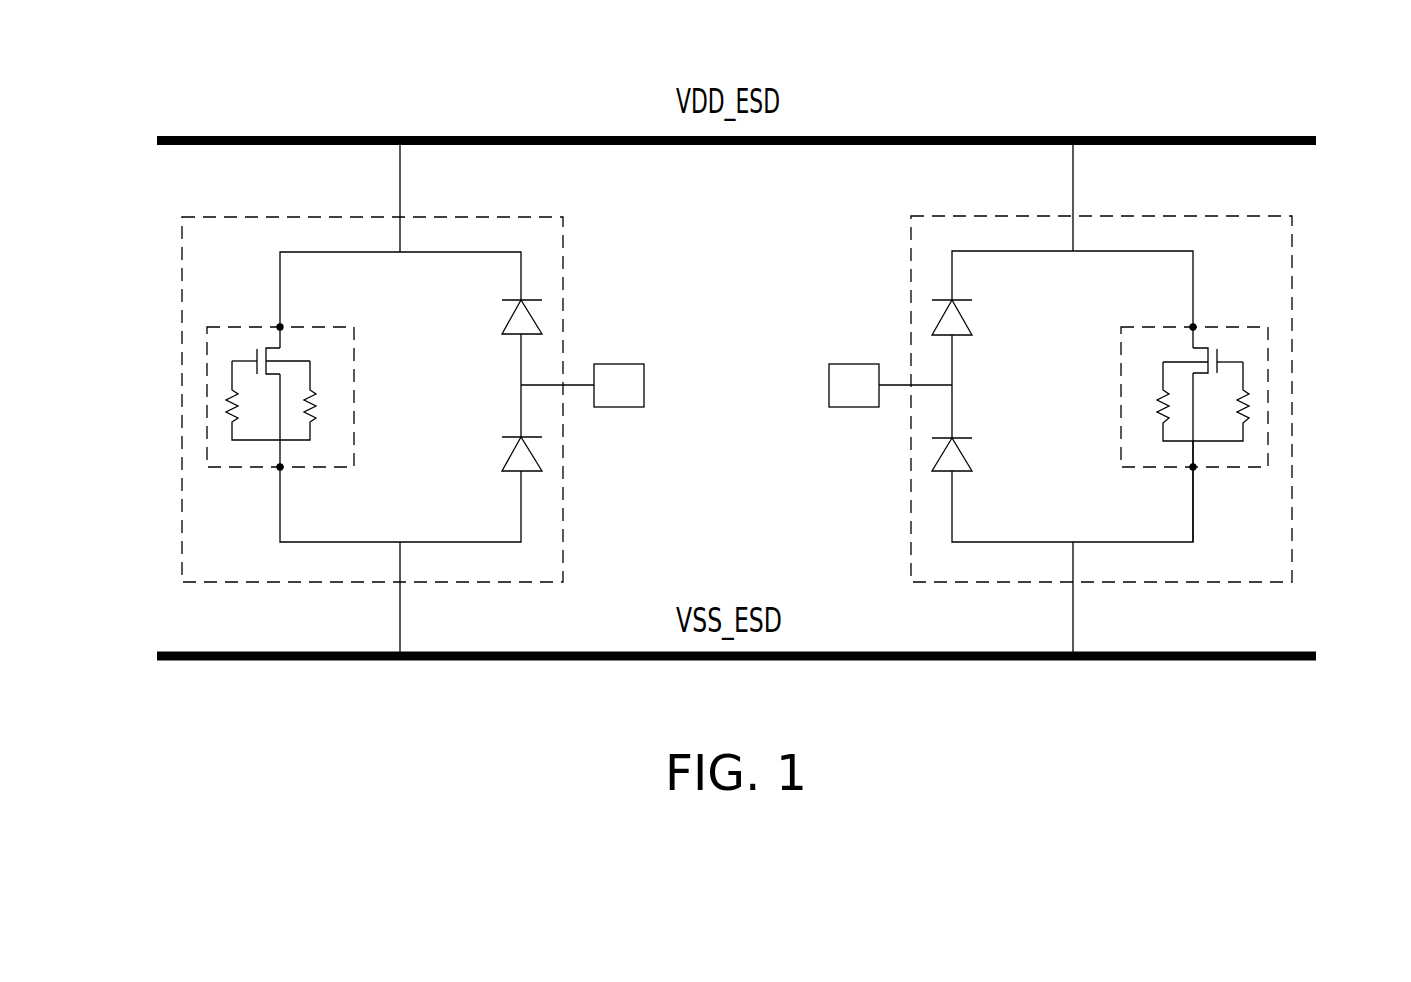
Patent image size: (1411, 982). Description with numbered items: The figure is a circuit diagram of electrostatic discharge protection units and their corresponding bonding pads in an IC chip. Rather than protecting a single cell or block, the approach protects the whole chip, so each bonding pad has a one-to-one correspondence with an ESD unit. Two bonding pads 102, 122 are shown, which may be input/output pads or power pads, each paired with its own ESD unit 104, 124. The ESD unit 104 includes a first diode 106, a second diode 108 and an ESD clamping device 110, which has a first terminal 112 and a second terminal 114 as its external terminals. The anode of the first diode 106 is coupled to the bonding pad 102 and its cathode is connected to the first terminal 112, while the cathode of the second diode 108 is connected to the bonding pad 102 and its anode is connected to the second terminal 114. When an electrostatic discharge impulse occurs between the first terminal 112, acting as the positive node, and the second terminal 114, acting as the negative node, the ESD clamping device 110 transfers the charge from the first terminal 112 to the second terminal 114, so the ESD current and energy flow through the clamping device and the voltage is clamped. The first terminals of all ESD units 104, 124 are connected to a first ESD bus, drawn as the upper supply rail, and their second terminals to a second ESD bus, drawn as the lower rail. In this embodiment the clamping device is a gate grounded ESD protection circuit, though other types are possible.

The bonding pad 102 is at (850, 364).
The ESD unit 104 is at (1110, 398).
The first diode 106 is at (958, 300).
The second diode 108 is at (958, 438).
The ESD clamping device 110 is at (1178, 363).
The first terminal 112 is at (1196, 326).
The second terminal 114 is at (1195, 468).
The bonding pad 122 is at (622, 364).
The ESD unit 124 is at (362, 398).